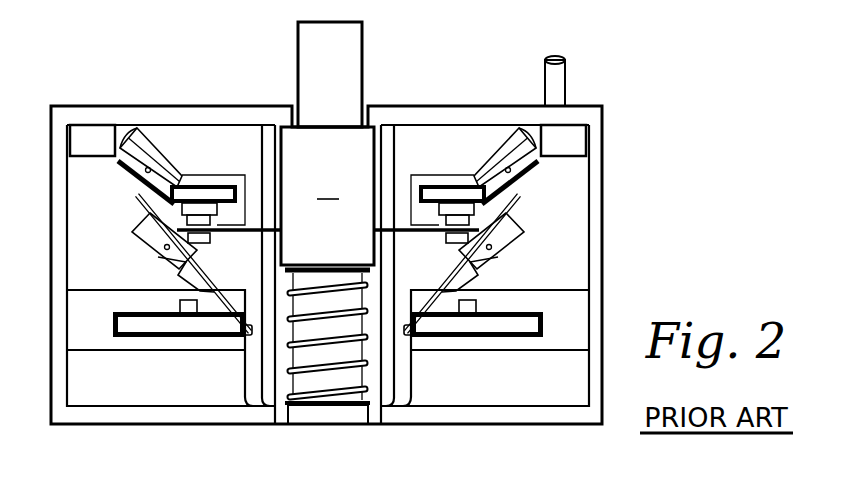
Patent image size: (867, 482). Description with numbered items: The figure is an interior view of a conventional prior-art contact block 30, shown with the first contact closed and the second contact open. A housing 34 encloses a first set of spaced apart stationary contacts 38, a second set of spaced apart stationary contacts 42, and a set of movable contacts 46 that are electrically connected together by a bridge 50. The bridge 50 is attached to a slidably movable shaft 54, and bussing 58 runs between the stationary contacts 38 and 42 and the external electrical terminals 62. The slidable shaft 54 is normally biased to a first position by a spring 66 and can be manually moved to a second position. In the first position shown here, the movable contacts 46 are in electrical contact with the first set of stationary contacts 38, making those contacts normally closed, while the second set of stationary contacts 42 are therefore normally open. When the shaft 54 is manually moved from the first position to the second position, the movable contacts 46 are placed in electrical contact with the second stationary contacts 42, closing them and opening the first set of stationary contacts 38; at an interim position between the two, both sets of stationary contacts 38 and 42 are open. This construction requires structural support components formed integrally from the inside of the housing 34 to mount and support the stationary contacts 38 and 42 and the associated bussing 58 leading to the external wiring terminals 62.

The contact block 30 is at (438, 104).
The housing 34 is at (230, 115).
The first set of spaced apart stationary contacts 38 is at (212, 214).
The second set of spaced apart stationary contacts 42 is at (183, 300).
The movable contacts 46 is at (158, 257).
The bridge 50 is at (408, 228).
The slidably movable shaft 54 is at (327, 143).
The bussing 58 is at (200, 190).
The external electrical terminals 62 is at (150, 142).
The spring 66 is at (277, 347).